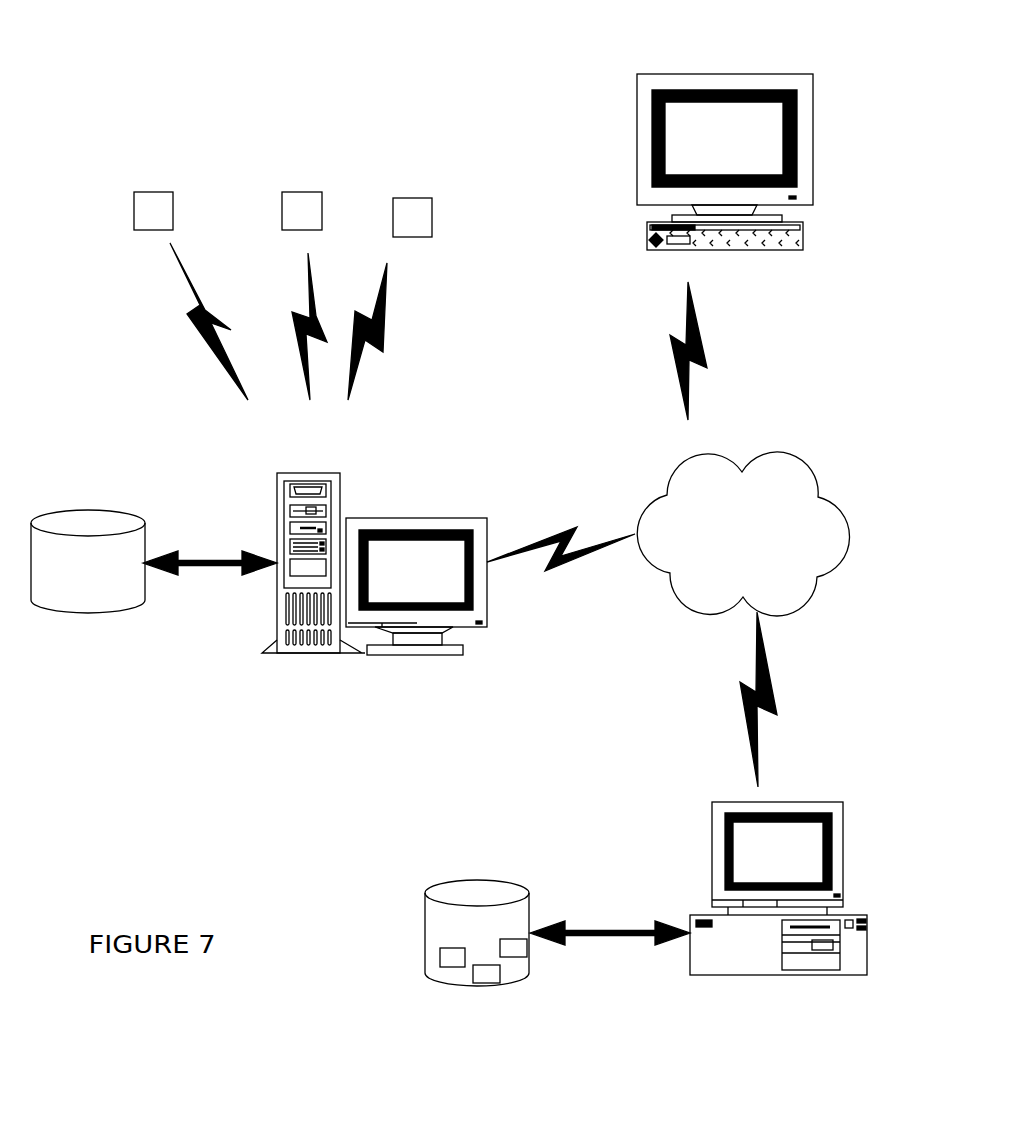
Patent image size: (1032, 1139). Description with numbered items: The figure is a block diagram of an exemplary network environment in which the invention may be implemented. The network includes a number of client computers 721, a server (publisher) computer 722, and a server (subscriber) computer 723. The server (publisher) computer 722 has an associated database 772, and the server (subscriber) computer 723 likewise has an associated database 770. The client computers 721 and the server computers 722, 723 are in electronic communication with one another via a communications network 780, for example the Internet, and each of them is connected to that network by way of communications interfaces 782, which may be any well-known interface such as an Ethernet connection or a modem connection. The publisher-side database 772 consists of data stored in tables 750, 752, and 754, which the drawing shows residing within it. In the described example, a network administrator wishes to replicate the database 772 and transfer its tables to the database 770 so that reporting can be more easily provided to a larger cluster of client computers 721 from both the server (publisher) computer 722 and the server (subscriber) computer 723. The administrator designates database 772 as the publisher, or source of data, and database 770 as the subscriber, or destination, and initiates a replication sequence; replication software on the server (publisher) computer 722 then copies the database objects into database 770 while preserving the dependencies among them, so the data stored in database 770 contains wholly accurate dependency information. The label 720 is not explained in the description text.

The client computers 721 is at (170, 192).
The server (subscriber) computer 723 is at (300, 472).
The database 770 is at (83, 510).
The communications network 780 is at (710, 453).
The communications interfaces 782 is at (670, 352).
The server computer (publisher) 720 is at (778, 883).
The server (publisher) computer 722 is at (797, 800).
The database 772 is at (475, 880).
The table 750 is at (438, 957).
The table 752 is at (487, 985).
The table 754 is at (513, 958).